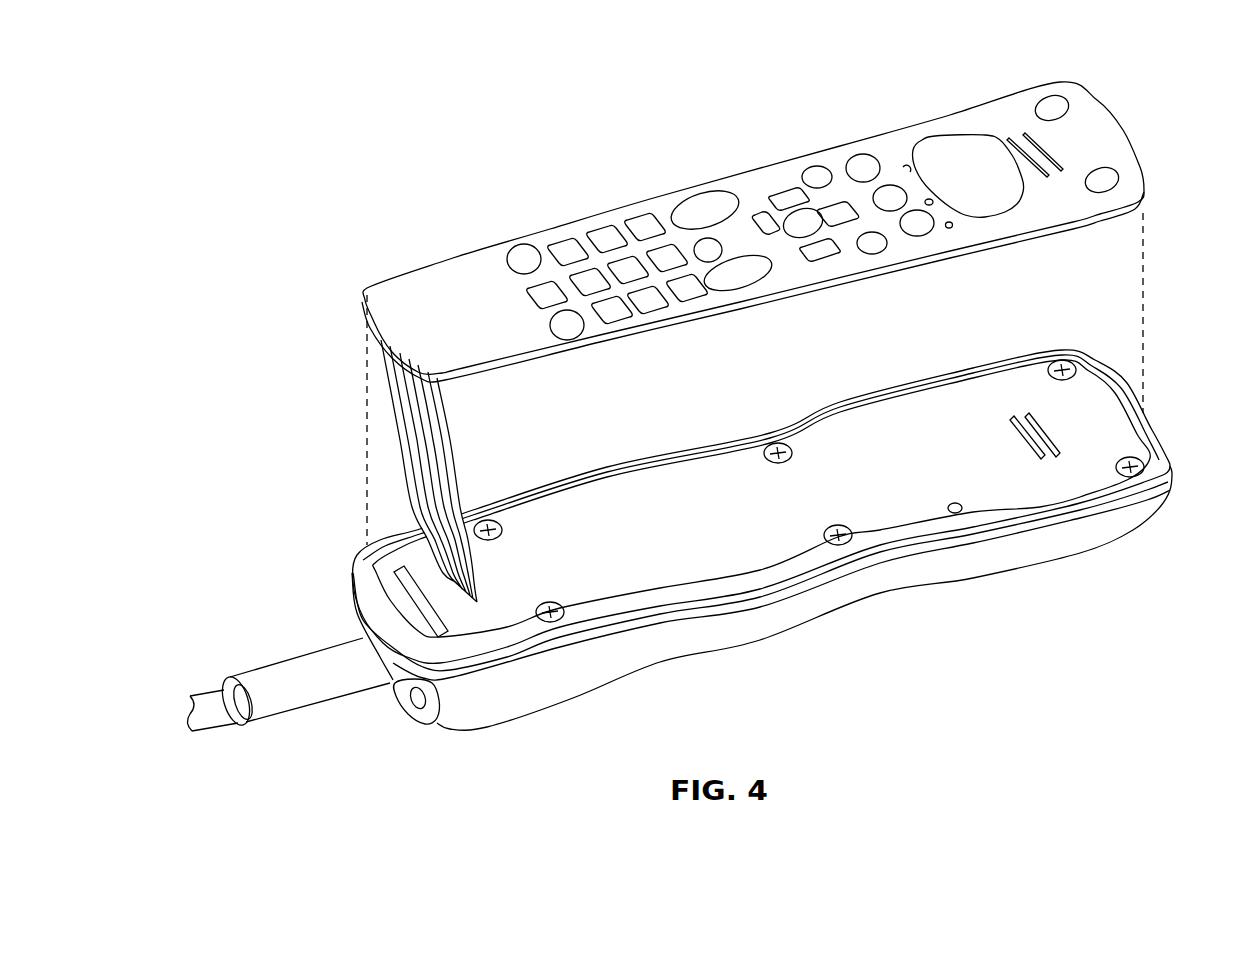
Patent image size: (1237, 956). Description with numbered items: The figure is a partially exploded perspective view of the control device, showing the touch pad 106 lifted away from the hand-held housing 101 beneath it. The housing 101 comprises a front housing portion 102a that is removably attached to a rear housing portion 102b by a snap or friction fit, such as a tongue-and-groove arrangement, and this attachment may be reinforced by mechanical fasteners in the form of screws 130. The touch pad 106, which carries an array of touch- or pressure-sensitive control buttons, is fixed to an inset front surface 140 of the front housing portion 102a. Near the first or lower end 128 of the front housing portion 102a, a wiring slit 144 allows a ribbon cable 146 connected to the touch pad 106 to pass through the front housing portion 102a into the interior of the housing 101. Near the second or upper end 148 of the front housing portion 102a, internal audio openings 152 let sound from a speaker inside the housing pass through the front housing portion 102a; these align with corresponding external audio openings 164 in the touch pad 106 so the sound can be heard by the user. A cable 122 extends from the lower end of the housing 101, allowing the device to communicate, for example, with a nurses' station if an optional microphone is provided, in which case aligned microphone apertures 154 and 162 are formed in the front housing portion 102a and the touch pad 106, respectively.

The hand-held housing 101 is at (1093, 577).
The front housing portion 102a is at (1123, 387).
The rear housing portion 102b is at (1142, 522).
The touch pad 106 is at (933, 122).
The cable 122 is at (210, 700).
The lower end 128 is at (417, 737).
The screws 130 is at (1062, 363).
The inset front surface 140 is at (720, 553).
The wiring slit 144 is at (398, 580).
The ribbon cable 146 is at (403, 415).
The upper end 148 is at (1118, 552).
The internal audio openings 152 is at (1027, 415).
The microphone aperture 154 is at (957, 513).
The microphone aperture 162 is at (950, 229).
The external audio openings 164 is at (1024, 134).